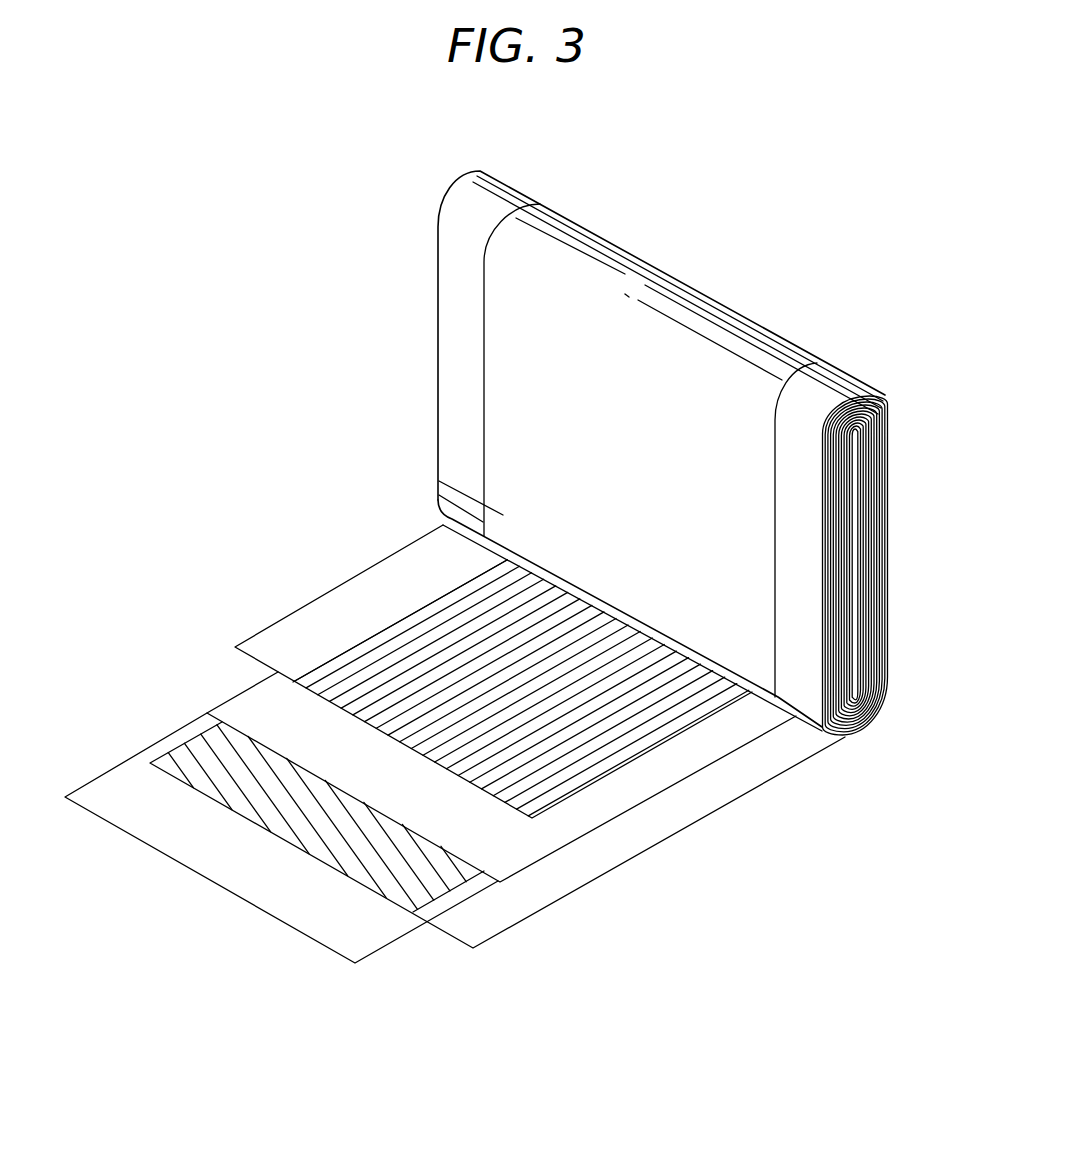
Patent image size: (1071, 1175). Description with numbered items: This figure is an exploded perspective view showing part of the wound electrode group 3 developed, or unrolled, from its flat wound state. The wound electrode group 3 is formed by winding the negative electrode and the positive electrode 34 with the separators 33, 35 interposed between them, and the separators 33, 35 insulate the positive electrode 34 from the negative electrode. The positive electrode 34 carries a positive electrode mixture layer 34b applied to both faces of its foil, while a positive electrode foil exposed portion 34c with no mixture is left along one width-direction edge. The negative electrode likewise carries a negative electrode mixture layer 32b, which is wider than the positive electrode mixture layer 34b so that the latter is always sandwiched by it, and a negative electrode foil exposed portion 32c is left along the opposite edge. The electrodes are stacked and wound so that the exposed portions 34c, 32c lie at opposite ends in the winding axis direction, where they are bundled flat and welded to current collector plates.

The wound electrode group 3 is at (778, 352).
The negative electrode mixture layer 32b is at (415, 880).
The negative electrode foil exposed portion 32c is at (795, 548).
The separator 33 is at (250, 705).
The positive electrode 34 is at (253, 633).
The positive electrode mixture layer 34b is at (437, 637).
The positive electrode foil exposed portion 34c is at (465, 360).
The separator 35 is at (113, 793).